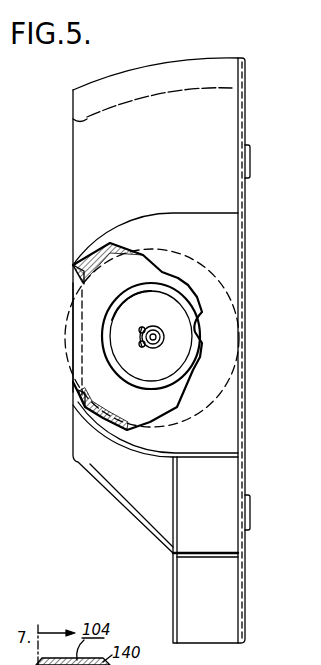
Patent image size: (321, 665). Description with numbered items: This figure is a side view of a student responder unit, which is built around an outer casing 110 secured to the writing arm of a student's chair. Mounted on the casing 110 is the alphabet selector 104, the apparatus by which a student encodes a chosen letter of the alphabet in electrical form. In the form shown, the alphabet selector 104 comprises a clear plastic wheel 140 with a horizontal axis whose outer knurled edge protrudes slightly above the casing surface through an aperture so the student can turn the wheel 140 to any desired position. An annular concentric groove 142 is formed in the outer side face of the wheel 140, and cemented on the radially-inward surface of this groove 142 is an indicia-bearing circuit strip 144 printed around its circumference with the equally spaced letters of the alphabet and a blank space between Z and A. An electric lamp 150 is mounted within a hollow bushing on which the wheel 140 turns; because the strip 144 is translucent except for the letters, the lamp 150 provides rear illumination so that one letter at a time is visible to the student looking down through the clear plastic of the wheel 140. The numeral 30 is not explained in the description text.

The back plate 30 is at (138, 65).
The outer casing 110 is at (73, 119).
The clear plastic wheel 140 is at (68, 348).
The alphabet selector 104 is at (78, 368).
The annular concentric groove 142 is at (119, 306).
The indicia-bearing circuit strip 144 is at (137, 385).
The electric lamp 150 is at (152, 341).